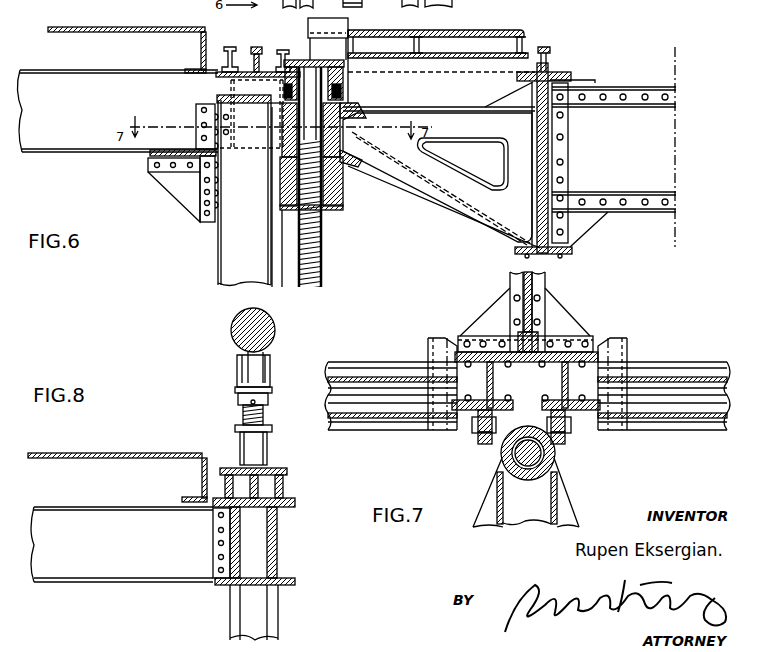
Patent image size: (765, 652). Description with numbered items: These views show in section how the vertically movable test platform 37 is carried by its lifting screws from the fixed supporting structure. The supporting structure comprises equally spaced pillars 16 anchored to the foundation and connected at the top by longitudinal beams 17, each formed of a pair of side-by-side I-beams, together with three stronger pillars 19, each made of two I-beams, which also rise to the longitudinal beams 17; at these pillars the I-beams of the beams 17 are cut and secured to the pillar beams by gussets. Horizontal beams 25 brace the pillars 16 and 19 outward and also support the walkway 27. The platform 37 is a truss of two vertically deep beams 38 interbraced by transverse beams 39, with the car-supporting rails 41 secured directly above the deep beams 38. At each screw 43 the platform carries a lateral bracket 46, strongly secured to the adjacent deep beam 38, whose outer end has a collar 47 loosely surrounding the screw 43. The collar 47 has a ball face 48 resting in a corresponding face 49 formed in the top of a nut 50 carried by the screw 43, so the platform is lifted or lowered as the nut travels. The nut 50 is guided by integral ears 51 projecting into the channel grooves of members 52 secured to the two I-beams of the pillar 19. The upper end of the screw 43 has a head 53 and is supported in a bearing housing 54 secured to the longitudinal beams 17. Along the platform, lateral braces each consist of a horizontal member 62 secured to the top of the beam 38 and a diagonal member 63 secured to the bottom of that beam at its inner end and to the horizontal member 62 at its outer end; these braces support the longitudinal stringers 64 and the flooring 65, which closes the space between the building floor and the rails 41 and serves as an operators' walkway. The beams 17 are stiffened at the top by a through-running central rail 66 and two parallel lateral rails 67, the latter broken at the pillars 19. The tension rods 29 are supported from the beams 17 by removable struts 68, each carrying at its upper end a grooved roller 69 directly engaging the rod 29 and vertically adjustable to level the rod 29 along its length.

In FIG. 8, the pillar 16 is at (280, 620).
In FIG. 7, the longitudinal beam 17 is at (324, 392).
In FIG. 8, the longitudinal beam 17 is at (233, 547).
In FIG. 6, the pillar 19 is at (222, 255).
In FIG. 7, the pillar 19 is at (562, 381).
In FIG. 6, the horizontal beam 25 is at (68, 142).
In FIG. 7, the horizontal beam 25 is at (546, 281).
In FIG. 8, the horizontal beam 25 is at (158, 580).
In FIG. 6, the walkway 27 is at (150, 28).
In FIG. 8, the walkway 27 is at (157, 452).
In FIG. 8, the tension rod 29 is at (276, 328).
In FIG. 6, the platform 37 is at (620, 86).
In FIG. 6, the vertically deep beam 38 is at (548, 157).
In FIG. 6, the transverse beam 39 is at (660, 181).
In FIG. 6, the rail 41 is at (550, 60).
In FIG. 6, the screw 43 is at (324, 247).
In FIG. 7, the screw 43 is at (515, 458).
In FIG. 6, the lateral bracket 46 is at (463, 118).
In FIG. 7, the lateral bracket 46 is at (570, 502).
In FIG. 6, the collar 47 is at (350, 120).
In FIG. 7, the collar 47 is at (503, 458).
In FIG. 6, the ball face 48 is at (341, 158).
In FIG. 6, the face 49 is at (341, 165).
In FIG. 6, the nut 50 is at (334, 211).
In FIG. 7, the ear 51 is at (483, 440).
In FIG. 7, the channel member 52 is at (480, 428).
In FIG. 6, the head 53 is at (298, 66).
In FIG. 6, the bearing housing 54 is at (320, 60).
In FIG. 6, the horizontal member 62 is at (438, 68).
In FIG. 6, the diagonal member 63 is at (458, 213).
In FIG. 6, the longitudinal stringer 64 is at (354, 45).
In FIG. 6, the flooring 65 is at (462, 31).
In FIG. 6, the central rail 66 is at (263, 44).
In FIG. 8, the central rail 66 is at (258, 487).
In FIG. 6, the lateral rail 67 is at (230, 46).
In FIG. 8, the lateral rail 67 is at (225, 485).
In FIG. 8, the strut 68 is at (265, 440).
In FIG. 8, the grooved roller 69 is at (258, 365).